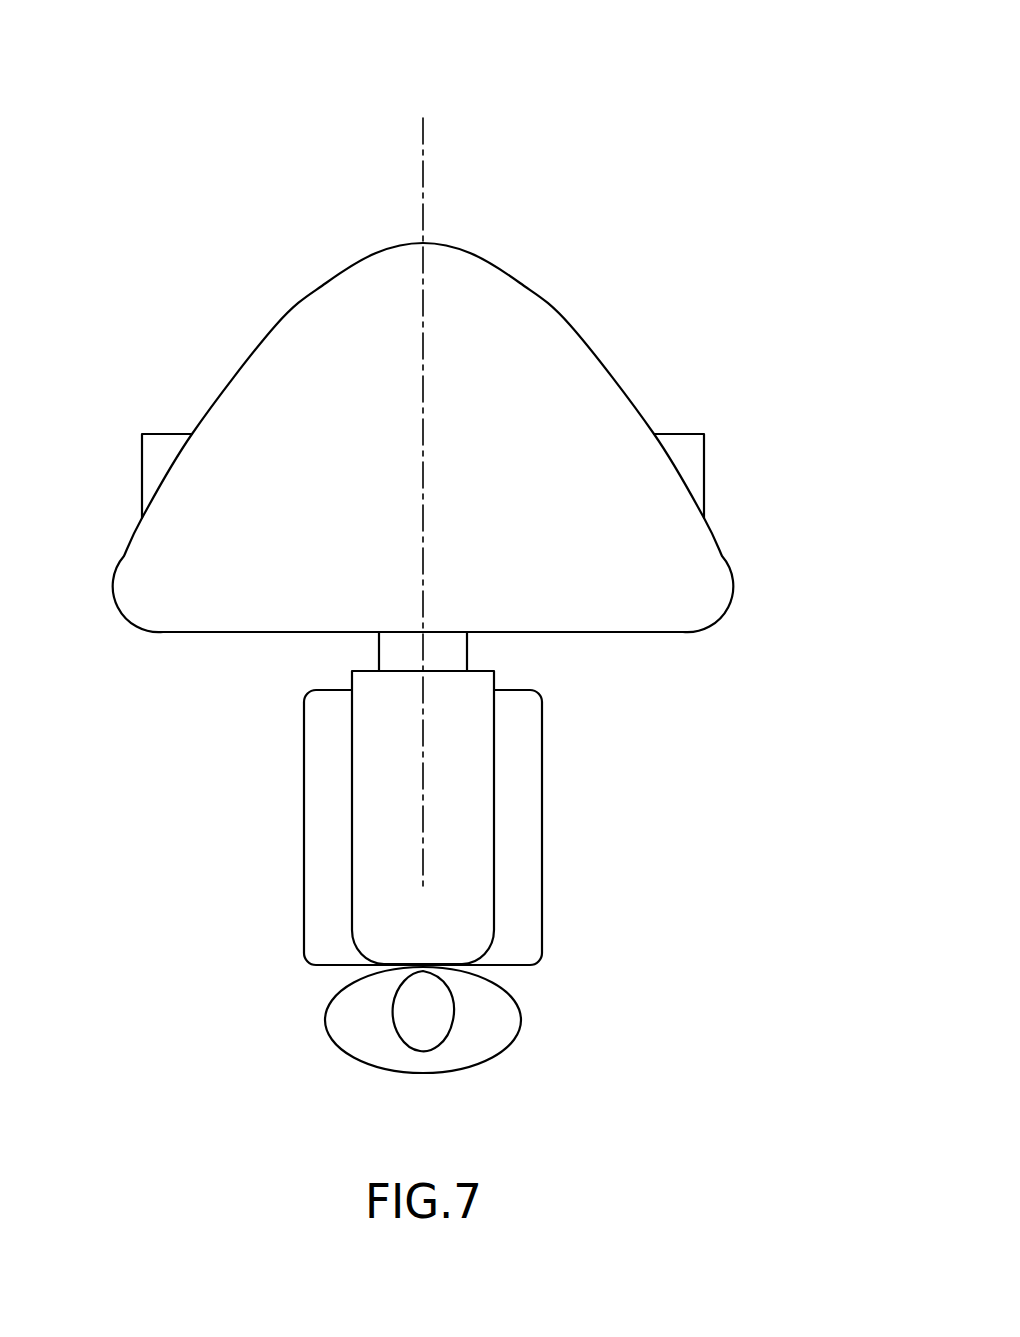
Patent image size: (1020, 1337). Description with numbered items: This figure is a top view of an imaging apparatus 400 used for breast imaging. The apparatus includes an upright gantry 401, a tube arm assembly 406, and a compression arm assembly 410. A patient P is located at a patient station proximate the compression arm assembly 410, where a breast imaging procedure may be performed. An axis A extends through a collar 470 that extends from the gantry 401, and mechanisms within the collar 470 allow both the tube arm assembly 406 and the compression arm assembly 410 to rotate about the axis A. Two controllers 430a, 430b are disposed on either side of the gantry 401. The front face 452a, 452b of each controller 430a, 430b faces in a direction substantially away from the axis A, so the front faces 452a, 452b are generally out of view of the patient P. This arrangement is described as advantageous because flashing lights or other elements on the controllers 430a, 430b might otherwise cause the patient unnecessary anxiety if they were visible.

The imaging apparatus 400 is at (610, 78).
The upright gantry 401 is at (545, 315).
The controller 430a is at (742, 372).
The controller 430b is at (110, 385).
The front face 452a is at (700, 441).
The front face 452b is at (142, 460).
The collar 470 is at (379, 649).
The tube arm assembly 406 is at (473, 713).
The compression arm assembly 410 is at (527, 842).
The axis A is at (422, 490).
The patient P is at (507, 1030).